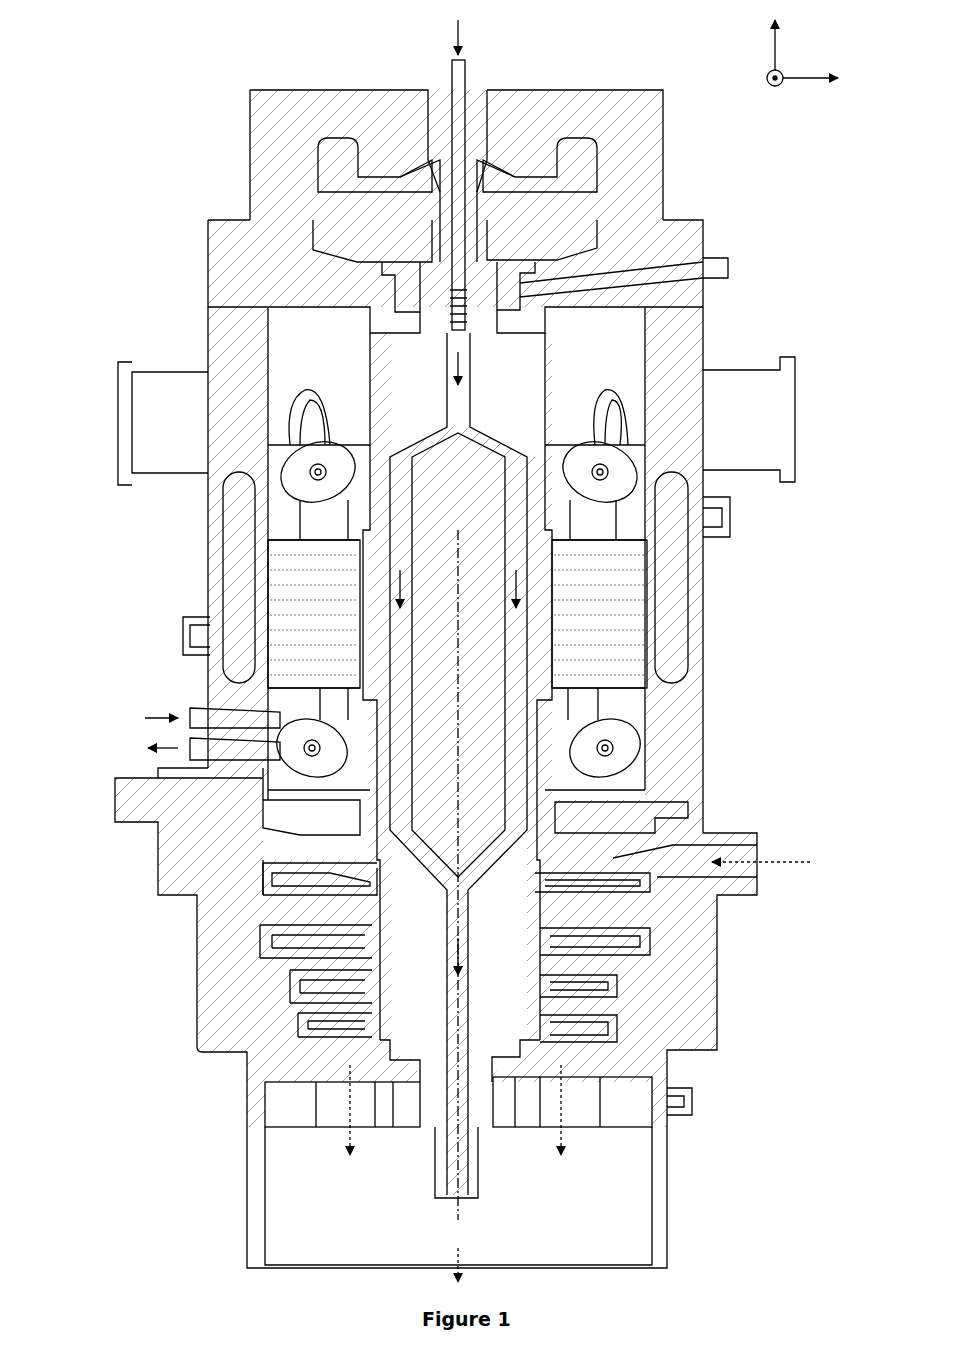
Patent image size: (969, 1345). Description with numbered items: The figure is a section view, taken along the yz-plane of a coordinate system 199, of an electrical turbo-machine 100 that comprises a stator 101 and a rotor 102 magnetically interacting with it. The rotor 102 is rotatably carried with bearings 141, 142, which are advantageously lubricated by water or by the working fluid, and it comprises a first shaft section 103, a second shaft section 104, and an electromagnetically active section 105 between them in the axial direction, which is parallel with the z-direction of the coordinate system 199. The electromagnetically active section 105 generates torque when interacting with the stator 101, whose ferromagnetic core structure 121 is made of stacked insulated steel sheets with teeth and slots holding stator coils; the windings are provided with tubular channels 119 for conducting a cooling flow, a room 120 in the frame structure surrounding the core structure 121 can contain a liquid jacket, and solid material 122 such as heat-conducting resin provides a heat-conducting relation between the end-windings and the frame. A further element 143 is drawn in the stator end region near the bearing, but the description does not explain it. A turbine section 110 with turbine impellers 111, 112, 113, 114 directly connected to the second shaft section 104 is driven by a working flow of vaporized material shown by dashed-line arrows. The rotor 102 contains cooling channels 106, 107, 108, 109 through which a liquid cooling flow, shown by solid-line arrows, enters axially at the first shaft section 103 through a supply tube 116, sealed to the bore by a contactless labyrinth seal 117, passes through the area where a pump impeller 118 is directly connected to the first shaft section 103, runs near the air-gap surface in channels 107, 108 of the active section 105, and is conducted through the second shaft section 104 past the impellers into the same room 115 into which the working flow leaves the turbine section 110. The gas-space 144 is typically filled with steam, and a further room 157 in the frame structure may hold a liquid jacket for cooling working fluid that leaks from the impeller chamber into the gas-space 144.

The electrical turbo-machine 100 is at (178, 72).
The stator 101 is at (205, 342).
The rotor 102 is at (368, 368).
The first shaft section 103 is at (398, 686).
The second shaft section 104 is at (457, 995).
The electromagnetically active section 105 is at (458, 776).
The cooling channel 106 is at (468, 405).
The cooling channel 107 is at (412, 525).
The cooling channel 108 is at (505, 720).
The cooling channel 109 is at (468, 940).
The turbine section 110 is at (720, 985).
The turbine impeller 111 is at (630, 880).
The turbine impeller 112 is at (620, 940).
The turbine impeller 113 is at (610, 985).
The turbine impeller 114 is at (580, 1030).
The room 115 is at (458, 1173).
The supply tube 116 is at (466, 80).
The contactless labyrinth seal 117 is at (458, 295).
The pump impeller 118 is at (438, 150).
The tubular channels 119 is at (312, 745).
The room 120 is at (238, 582).
The ferromagnetic core structure 121 is at (457, 614).
The solid material 122 is at (275, 445).
The bearing 141 is at (510, 305).
The bearing 142 is at (510, 1130).
The upper bearing 143 is at (338, 445).
The gas-space 144 is at (577, 686).
The room 157 is at (475, 817).
The coordinate system 199 is at (806, 52).